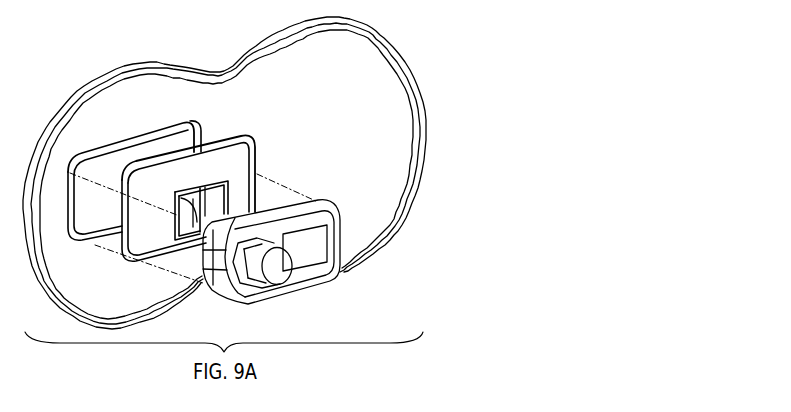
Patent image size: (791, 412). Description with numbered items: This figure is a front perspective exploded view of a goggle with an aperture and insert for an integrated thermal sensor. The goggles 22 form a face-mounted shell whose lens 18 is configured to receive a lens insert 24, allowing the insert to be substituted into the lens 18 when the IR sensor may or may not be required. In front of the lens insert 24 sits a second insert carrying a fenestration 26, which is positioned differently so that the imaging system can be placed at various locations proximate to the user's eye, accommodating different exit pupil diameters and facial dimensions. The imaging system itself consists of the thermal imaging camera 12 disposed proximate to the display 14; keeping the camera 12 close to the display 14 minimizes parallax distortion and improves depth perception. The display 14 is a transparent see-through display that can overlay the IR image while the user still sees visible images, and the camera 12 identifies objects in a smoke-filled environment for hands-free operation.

The thermal imaging camera 12 is at (274, 276).
The display 14 is at (316, 259).
The lens 18 is at (339, 139).
The goggles 22 is at (417, 80).
The lens insert 24 is at (155, 228).
The fenestration 26 is at (214, 203).